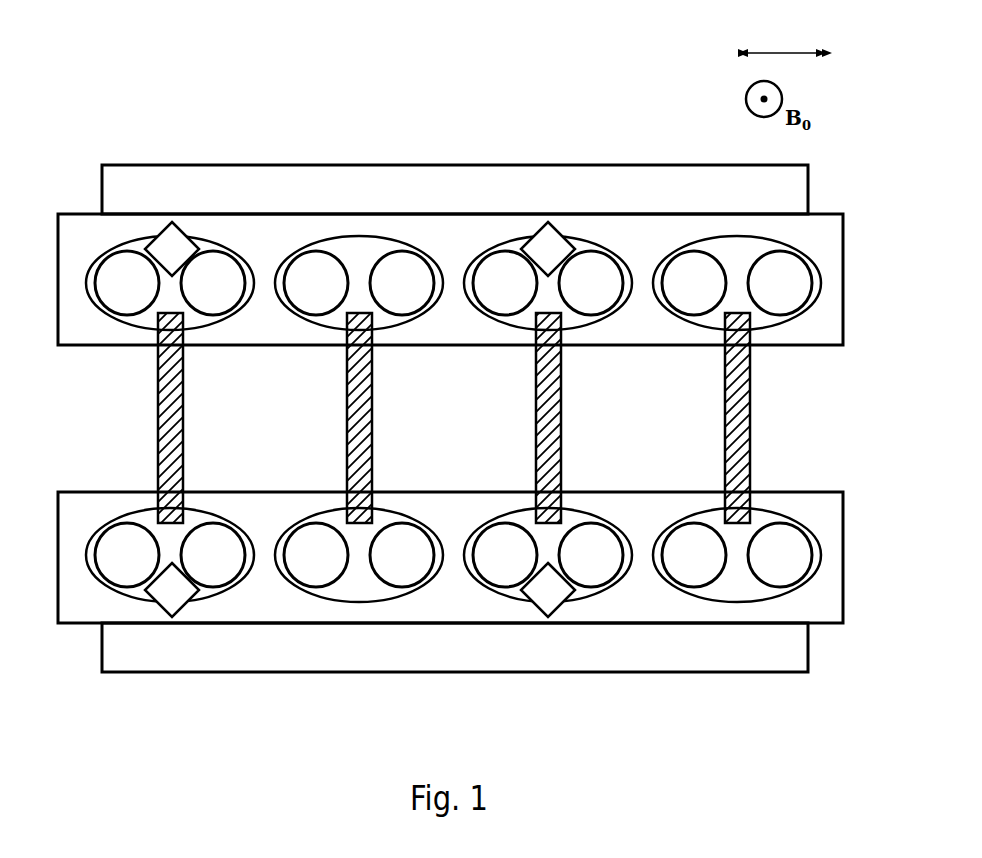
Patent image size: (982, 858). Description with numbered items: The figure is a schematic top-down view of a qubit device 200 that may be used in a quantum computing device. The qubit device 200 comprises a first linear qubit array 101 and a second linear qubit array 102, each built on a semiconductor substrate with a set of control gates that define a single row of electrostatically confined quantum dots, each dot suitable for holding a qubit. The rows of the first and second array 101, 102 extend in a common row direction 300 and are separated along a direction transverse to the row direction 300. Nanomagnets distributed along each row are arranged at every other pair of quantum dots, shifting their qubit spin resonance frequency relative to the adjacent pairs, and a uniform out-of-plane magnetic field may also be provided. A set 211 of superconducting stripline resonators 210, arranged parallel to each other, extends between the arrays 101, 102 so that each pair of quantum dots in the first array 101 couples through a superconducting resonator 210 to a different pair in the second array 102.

The qubit device 200 is at (576, 74).
The row direction 300 is at (785, 44).
The first linear qubit array 101 is at (838, 183).
The second linear qubit array 102 is at (838, 461).
The superconducting resonator 210 is at (752, 430).
The set of superconducting resonators 211 is at (112, 420).